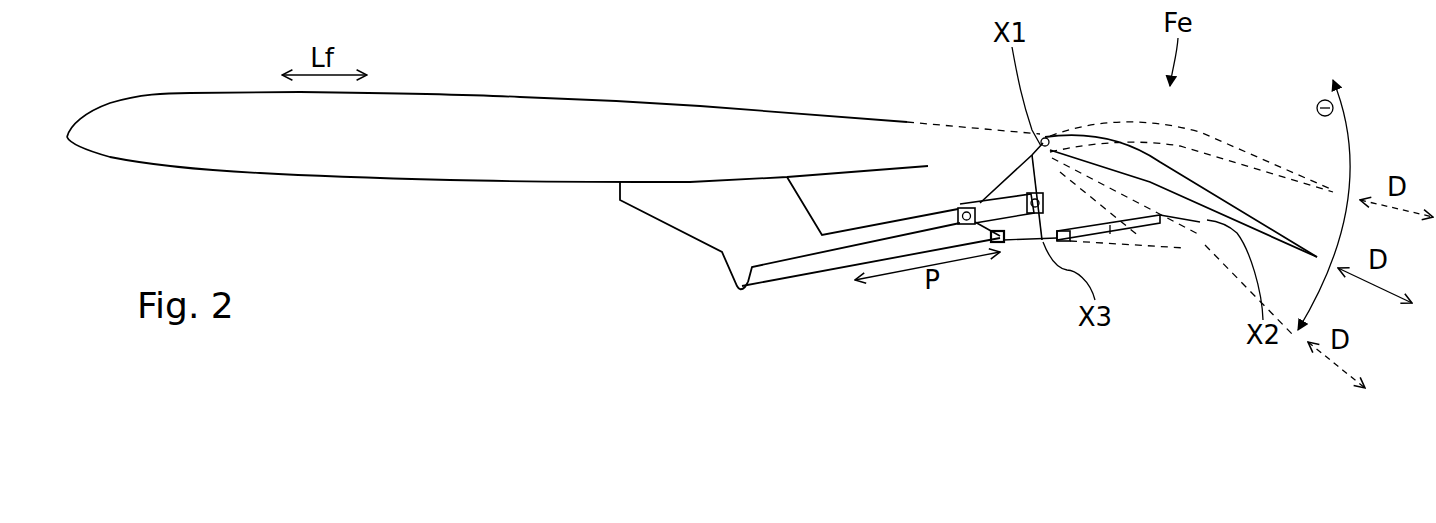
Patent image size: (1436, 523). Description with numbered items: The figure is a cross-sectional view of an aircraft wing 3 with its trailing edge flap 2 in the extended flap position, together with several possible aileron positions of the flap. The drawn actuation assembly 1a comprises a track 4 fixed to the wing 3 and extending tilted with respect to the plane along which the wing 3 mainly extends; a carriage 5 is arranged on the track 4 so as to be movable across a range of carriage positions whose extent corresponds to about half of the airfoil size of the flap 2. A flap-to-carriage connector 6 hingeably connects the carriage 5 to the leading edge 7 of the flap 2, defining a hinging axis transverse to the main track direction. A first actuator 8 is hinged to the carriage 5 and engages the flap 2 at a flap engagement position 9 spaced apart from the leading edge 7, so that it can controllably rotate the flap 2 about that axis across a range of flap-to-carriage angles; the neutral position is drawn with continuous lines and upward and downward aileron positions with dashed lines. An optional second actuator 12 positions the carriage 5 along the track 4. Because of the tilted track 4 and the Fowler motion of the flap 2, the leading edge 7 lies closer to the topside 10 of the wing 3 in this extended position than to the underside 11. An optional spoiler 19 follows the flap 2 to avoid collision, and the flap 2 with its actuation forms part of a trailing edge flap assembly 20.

The actuation assembly 1a is at (1141, 343).
The trailing edge flap 2 is at (1181, 210).
The aircraft wing 3 is at (497, 140).
The track 4 is at (857, 240).
The carriage 5 is at (1028, 240).
The flap-to-carriage connector 6 is at (1001, 169).
The leading edge 7 is at (1038, 192).
The first actuator 8 is at (1110, 230).
The flap engagement position 9 is at (1200, 227).
The topside 10 is at (596, 93).
The underside 11 is at (522, 185).
The second actuator 12 is at (1003, 242).
The spoiler 19 is at (952, 125).
The trailing edge flap assembly 20 is at (1123, 59).